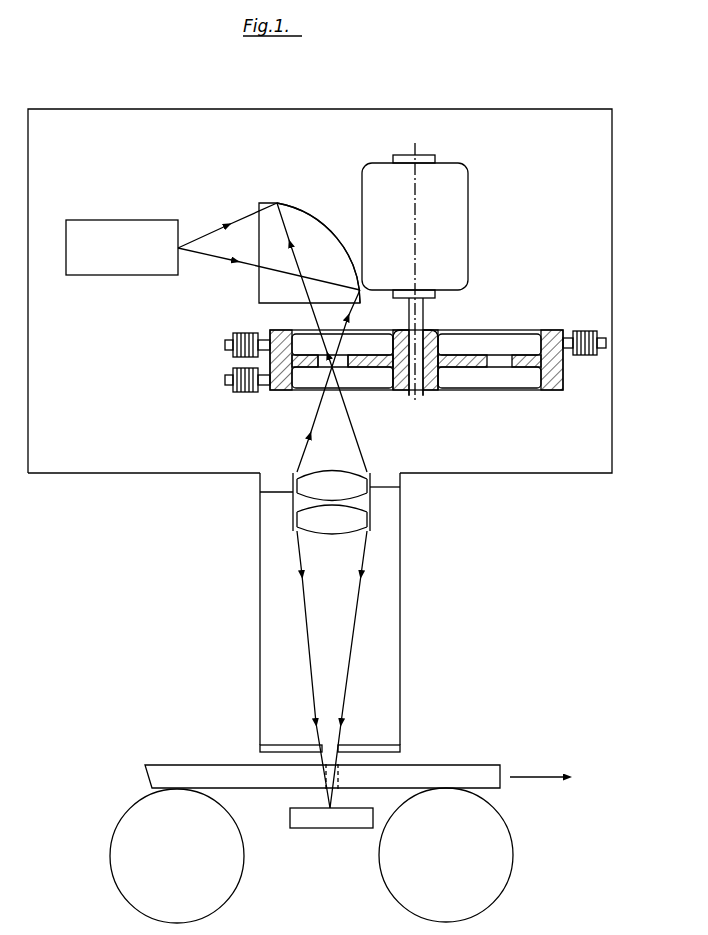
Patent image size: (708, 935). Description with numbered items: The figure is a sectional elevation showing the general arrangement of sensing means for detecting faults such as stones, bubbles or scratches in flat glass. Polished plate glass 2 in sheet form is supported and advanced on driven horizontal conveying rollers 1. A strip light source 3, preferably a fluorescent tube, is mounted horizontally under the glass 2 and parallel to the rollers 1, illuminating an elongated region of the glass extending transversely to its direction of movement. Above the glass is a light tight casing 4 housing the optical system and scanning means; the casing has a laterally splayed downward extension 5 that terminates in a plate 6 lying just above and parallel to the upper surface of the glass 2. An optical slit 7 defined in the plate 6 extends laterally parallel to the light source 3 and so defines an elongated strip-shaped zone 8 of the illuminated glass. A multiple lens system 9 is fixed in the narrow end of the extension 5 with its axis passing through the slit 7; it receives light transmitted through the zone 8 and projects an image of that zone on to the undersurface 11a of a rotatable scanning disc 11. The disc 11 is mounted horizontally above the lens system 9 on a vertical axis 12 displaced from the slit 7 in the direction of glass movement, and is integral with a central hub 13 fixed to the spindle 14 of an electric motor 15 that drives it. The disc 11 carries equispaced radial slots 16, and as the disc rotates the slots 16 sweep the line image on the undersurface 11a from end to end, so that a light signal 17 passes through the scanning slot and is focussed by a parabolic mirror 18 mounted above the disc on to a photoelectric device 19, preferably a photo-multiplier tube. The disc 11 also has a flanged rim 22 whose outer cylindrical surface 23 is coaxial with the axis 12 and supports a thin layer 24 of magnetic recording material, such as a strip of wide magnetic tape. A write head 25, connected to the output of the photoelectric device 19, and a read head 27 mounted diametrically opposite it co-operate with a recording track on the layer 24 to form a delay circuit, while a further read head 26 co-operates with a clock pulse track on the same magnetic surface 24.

The conveying rollers 1 is at (140, 825).
The polished plate glass 2 is at (440, 778).
The strip light source 3 is at (300, 822).
The light tight casing 4 is at (529, 109).
The downward extension 5 is at (402, 596).
The plate 6 is at (397, 748).
The optical slit 7 is at (340, 746).
The zone 8 is at (322, 775).
The multiple lens system 9 is at (303, 503).
The scanning disc 11 is at (380, 362).
The undersurface of the disc 11a is at (368, 364).
The vertical axis 12 is at (417, 400).
The central hub 13 is at (433, 352).
The spindle 14 is at (420, 325).
The electric motor 15 is at (446, 216).
The radial slots 16 is at (323, 360).
The light signal 17 is at (303, 290).
The parabolic mirror 18 is at (298, 215).
The photoelectric device 19 is at (138, 230).
The flanged rim 22 is at (285, 378).
The outer cylindrical surface 23 is at (560, 378).
The layer of magnetic recording material 24 is at (272, 333).
The magnetic recording head 25 is at (226, 344).
The magnetic recording head 26 is at (230, 385).
The magnetic recording head 27 is at (586, 331).